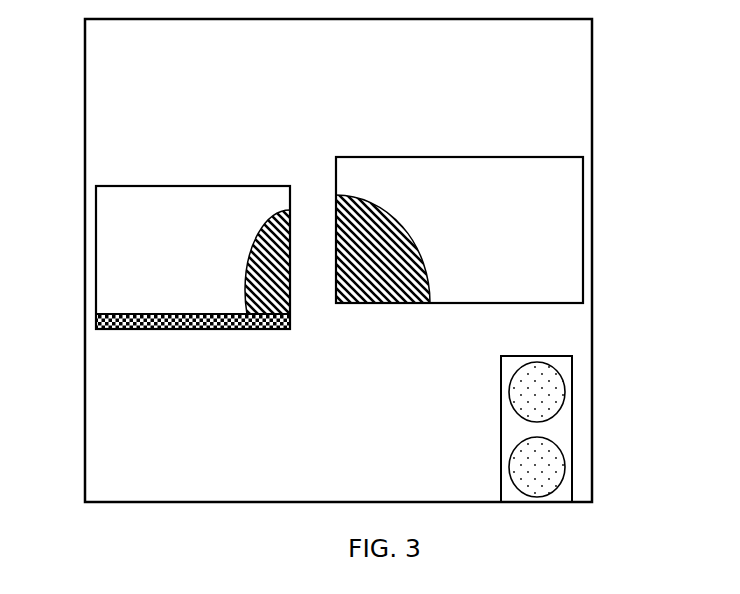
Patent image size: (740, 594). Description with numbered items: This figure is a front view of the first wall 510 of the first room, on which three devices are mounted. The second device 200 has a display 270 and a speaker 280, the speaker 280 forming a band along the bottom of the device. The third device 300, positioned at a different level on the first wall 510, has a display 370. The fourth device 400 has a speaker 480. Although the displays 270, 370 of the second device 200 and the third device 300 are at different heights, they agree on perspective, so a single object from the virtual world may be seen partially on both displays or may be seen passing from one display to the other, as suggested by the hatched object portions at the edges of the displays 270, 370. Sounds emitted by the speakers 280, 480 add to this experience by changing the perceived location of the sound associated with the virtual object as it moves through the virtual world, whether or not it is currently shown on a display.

The first wall 510 is at (573, 66).
The second device 200 is at (102, 198).
The display 270 is at (147, 200).
The speaker 280 is at (120, 320).
The third device 300 is at (578, 190).
The display 370 is at (570, 250).
The fourth device 400 is at (562, 412).
The speaker 480 is at (542, 383).